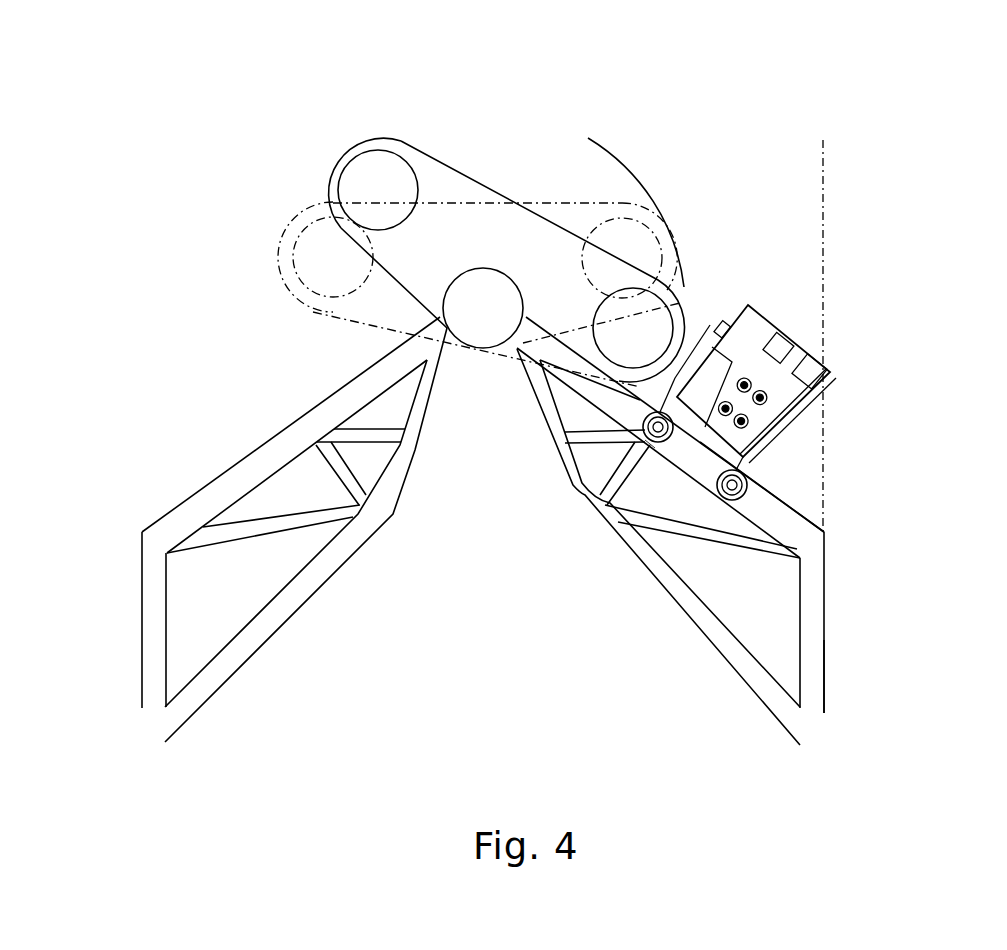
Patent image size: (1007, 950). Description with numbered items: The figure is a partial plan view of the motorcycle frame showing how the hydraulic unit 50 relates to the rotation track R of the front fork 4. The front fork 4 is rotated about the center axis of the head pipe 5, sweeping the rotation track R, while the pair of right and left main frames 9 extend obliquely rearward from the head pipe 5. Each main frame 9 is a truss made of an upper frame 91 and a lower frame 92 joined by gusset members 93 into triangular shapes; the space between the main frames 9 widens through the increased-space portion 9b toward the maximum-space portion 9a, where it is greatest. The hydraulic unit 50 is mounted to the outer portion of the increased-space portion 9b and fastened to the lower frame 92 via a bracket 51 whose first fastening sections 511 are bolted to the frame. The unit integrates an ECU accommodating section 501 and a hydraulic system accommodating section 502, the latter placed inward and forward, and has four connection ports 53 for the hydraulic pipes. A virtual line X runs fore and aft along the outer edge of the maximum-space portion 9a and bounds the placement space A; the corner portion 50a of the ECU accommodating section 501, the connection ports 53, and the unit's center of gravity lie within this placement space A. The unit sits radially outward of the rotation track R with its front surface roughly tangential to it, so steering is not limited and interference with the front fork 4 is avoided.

The front fork 4 is at (372, 175).
The head pipe 5 is at (483, 318).
The main frame 9 is at (363, 560).
The maximum-space portion 9a is at (830, 637).
The increased-space portion 9b is at (810, 517).
The upper frame 91 is at (213, 678).
The lower frame 92 is at (241, 480).
The gusset member 93 is at (278, 522).
The hydraulic unit 50 is at (760, 292).
The corner portion 50a is at (800, 487).
The ECU accommodating section 501 is at (800, 415).
The hydraulic system accommodating section 502 is at (805, 342).
The bracket 51 is at (800, 448).
The first fastening section 511 is at (645, 440).
The connection port 53 is at (785, 300).
The rotation track R is at (613, 153).
The placement space A is at (795, 330).
The virtual line X is at (823, 322).